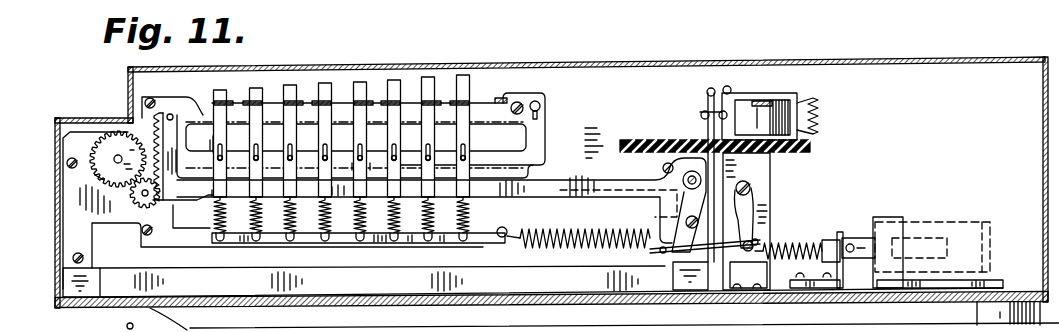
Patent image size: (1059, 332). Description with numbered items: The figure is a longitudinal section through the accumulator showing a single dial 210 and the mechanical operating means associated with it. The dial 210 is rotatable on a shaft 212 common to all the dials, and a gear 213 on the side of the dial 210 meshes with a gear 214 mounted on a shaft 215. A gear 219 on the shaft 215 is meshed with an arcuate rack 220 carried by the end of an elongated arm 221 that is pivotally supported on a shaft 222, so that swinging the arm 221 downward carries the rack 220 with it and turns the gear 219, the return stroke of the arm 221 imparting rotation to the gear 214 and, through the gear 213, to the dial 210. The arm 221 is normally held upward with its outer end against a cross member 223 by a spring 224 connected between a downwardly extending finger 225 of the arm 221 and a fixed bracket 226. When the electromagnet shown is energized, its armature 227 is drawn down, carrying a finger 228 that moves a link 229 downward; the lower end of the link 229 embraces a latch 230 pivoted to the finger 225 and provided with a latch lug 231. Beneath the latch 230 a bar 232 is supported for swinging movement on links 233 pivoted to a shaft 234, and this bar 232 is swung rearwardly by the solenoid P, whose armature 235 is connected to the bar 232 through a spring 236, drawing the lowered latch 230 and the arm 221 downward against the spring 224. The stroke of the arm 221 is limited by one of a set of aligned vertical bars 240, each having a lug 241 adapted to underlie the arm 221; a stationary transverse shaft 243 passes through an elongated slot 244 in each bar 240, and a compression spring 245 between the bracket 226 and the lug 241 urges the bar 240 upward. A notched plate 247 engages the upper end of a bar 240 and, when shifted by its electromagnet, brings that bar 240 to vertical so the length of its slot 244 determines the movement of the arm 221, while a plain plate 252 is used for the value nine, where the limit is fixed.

The dial 210 is at (100, 136).
The shaft 212 is at (114, 160).
The gear 213 is at (97, 177).
The gear 214 is at (133, 206).
The shaft 215 is at (140, 211).
The gear 219 is at (152, 229).
The arcuate rack 220 is at (164, 115).
The elongated arm 221 is at (546, 184).
The shaft 222 is at (692, 171).
The cross member 223 is at (173, 115).
The spring 224 is at (589, 248).
The finger 225 is at (656, 217).
The bracket 226 is at (483, 247).
The armature 227 is at (768, 94).
The finger 228 is at (706, 102).
The link 229 is at (718, 173).
The latch 230 is at (731, 290).
The latch lug 231 is at (753, 240).
The bar 232 is at (753, 250).
The links 233 is at (756, 203).
The shaft 234 is at (751, 189).
The armature 235 is at (862, 240).
The spring 236 is at (806, 240).
The vertical bar 240 is at (425, 77).
The lug 241 is at (213, 203).
The transverse shaft 243 is at (256, 157).
The slot 244 is at (220, 156).
The compression spring 245 is at (214, 226).
The plate 247 is at (466, 101).
The plain plate 252 is at (504, 99).
The solenoid P is at (949, 223).